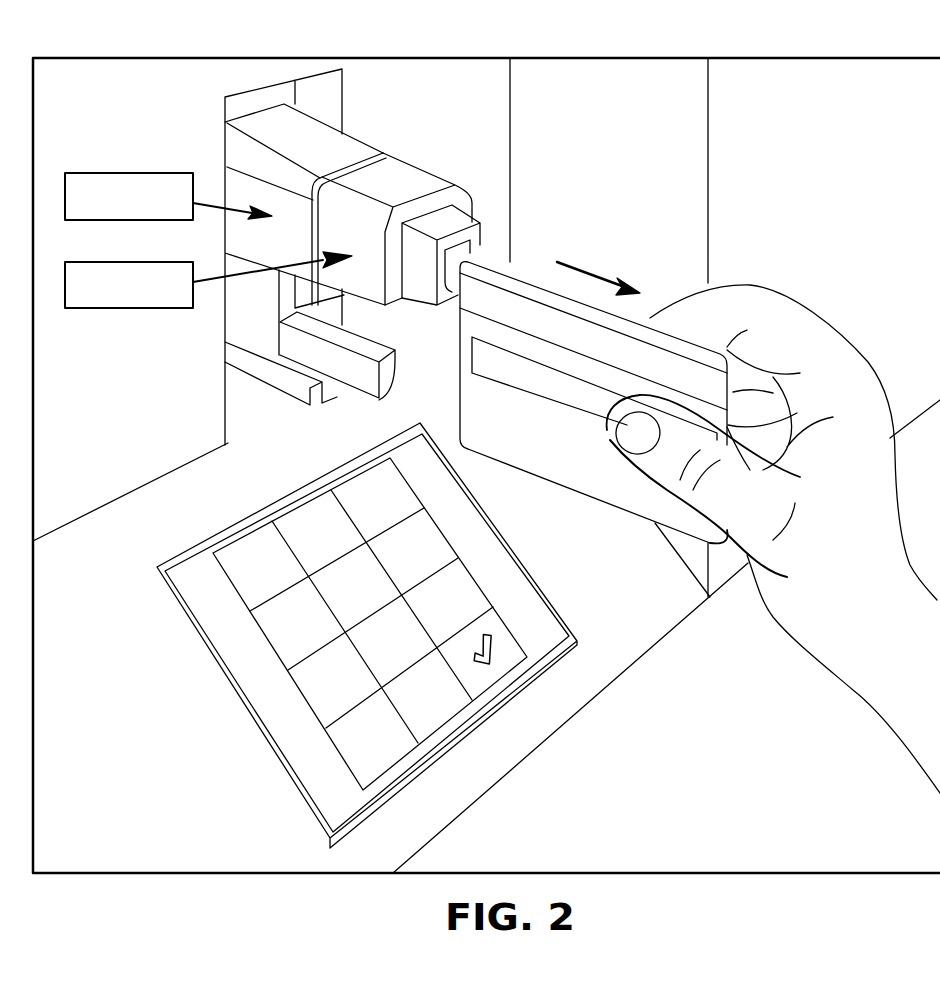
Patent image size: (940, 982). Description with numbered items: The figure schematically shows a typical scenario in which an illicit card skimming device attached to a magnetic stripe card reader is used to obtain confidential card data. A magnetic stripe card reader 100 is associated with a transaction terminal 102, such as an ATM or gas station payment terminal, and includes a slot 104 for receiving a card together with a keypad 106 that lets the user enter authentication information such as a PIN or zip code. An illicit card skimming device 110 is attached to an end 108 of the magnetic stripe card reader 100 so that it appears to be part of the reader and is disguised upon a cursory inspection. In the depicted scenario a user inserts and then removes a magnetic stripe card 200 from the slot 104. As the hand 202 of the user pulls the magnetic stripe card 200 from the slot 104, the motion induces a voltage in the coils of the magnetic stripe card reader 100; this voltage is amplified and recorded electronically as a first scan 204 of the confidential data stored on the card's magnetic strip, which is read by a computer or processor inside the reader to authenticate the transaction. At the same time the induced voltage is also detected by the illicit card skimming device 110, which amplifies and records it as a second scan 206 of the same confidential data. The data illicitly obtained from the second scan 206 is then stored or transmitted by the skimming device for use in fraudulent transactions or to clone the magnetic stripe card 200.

The magnetic stripe card reader 100 is at (309, 141).
The transaction terminal 102 is at (628, 627).
The slot 104 is at (335, 399).
The keypad 106 is at (452, 568).
The end 108 is at (362, 148).
The illicit card skimming device 110 is at (410, 178).
The magnetic stripe card 200 is at (532, 284).
The hand 202 is at (782, 327).
The first scan 204 is at (128, 173).
The second scan 206 is at (130, 308).